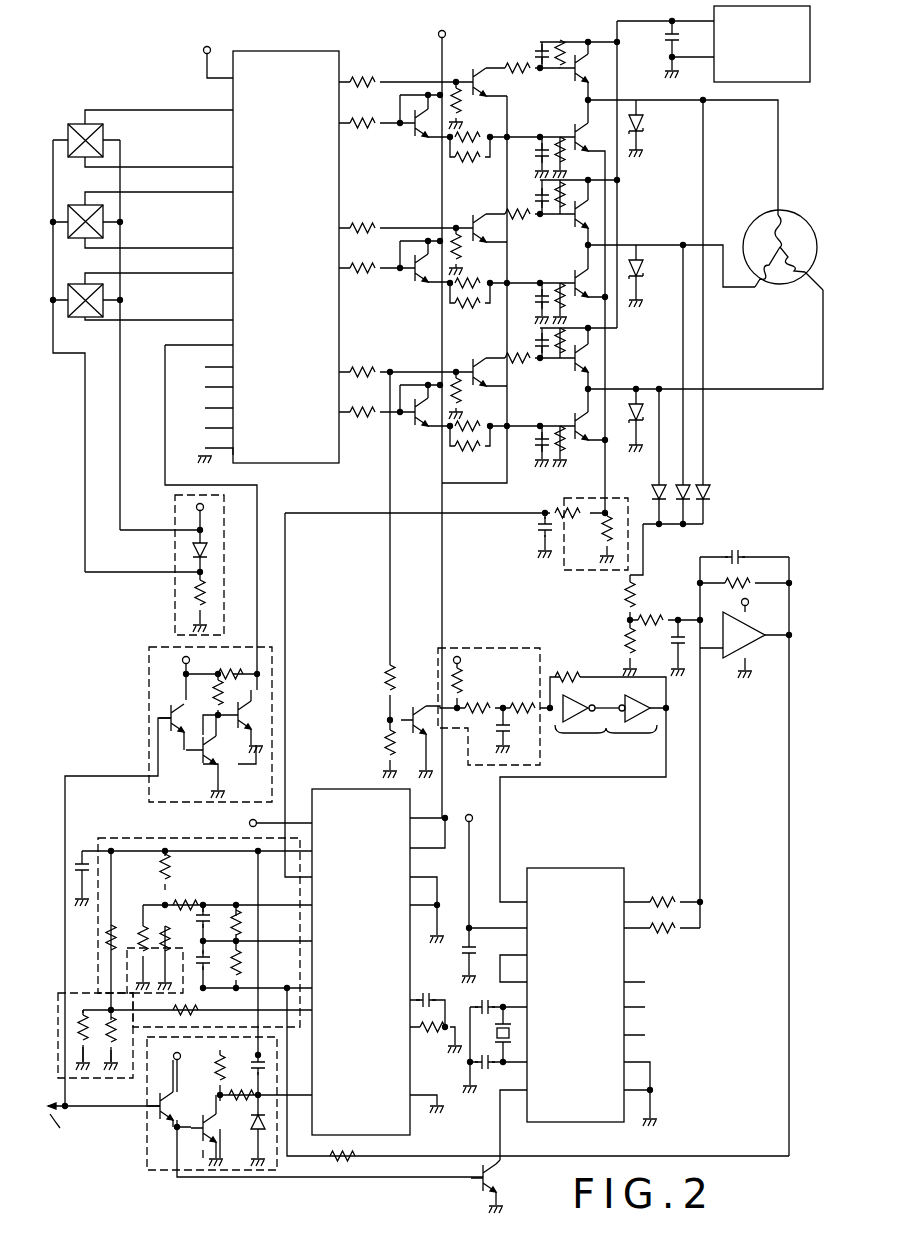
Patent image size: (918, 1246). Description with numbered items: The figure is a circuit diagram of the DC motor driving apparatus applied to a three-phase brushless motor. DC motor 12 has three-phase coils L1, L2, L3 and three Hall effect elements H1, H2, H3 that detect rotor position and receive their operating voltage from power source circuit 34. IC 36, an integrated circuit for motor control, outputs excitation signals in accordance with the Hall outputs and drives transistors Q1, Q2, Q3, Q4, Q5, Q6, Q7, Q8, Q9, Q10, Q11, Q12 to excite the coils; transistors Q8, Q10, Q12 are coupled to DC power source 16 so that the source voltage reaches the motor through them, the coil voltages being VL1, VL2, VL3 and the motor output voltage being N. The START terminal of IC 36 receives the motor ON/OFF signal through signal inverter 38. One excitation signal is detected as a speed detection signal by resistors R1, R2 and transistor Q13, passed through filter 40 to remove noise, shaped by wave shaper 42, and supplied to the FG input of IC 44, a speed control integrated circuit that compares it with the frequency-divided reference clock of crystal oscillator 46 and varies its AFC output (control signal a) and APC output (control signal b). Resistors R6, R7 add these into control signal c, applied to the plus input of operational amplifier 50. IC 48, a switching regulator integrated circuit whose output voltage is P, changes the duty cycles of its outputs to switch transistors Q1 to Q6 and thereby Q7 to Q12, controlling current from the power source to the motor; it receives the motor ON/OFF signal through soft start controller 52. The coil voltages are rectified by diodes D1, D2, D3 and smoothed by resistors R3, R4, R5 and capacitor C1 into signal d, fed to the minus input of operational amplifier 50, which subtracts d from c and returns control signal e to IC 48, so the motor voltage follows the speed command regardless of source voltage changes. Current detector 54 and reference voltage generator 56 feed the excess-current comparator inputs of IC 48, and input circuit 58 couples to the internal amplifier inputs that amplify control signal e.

The DC motor 12 is at (767, 245).
The DC power source 16 is at (690, 60).
The power source circuit 34 is at (174, 508).
The IC for motor control 36 is at (339, 58).
The signal inverter 38 is at (144, 658).
The filter 40 is at (478, 648).
The wave shaper 42 is at (584, 787).
The IC for speed control 44 is at (582, 988).
The crystal oscillator 46 is at (510, 1052).
The IC for a switching regulator 48 is at (356, 946).
The operational amplifier 50 is at (745, 853).
The soft start controller 52 is at (212, 1170).
The current detector 54 is at (564, 546).
The reference voltage generator 56 is at (93, 834).
The input circuit 58 is at (80, 1080).
The Hall effect element H1 is at (103, 133).
The Hall effect element H2 is at (103, 214).
The Hall effect element H3 is at (103, 293).
The transistor Q1 is at (420, 140).
The transistor Q2 is at (486, 75).
The transistor Q3 is at (420, 285).
The transistor Q4 is at (478, 212).
The transistor Q5 is at (420, 429).
The transistor Q6 is at (478, 356).
The transistor Q7 is at (575, 125).
The transistor Q8 is at (590, 72).
The transistor Q9 is at (575, 271).
The transistor Q10 is at (590, 218).
The transistor Q11 is at (575, 414).
The transistor Q12 is at (590, 362).
The transistor Q13 is at (418, 706).
The resistor R1 is at (385, 701).
The resistor R2 is at (385, 746).
The resistor R3 is at (625, 601).
The resistor R4 is at (625, 644).
The resistor R5 is at (651, 614).
The resistor R6 is at (668, 895).
The resistor R7 is at (672, 935).
The capacitor C1 is at (672, 640).
The diode D1 is at (712, 482).
The diode D2 is at (689, 470).
The diode D3 is at (649, 486).
The three-phase coil L1 is at (768, 212).
The three-phase coil L2 is at (750, 250).
The three-phase coil L3 is at (775, 285).
The output voltage of DC motor N is at (800, 285).
The coil voltage VL1 is at (703, 103).
The coil voltage VL2 is at (683, 241).
The coil voltage VL3 is at (660, 389).
The output voltage of IC 48 P is at (445, 815).
The control signal a is at (640, 900).
The control signal b is at (640, 930).
The control signal c is at (700, 785).
The signal d is at (724, 648).
The control signal e is at (789, 740).